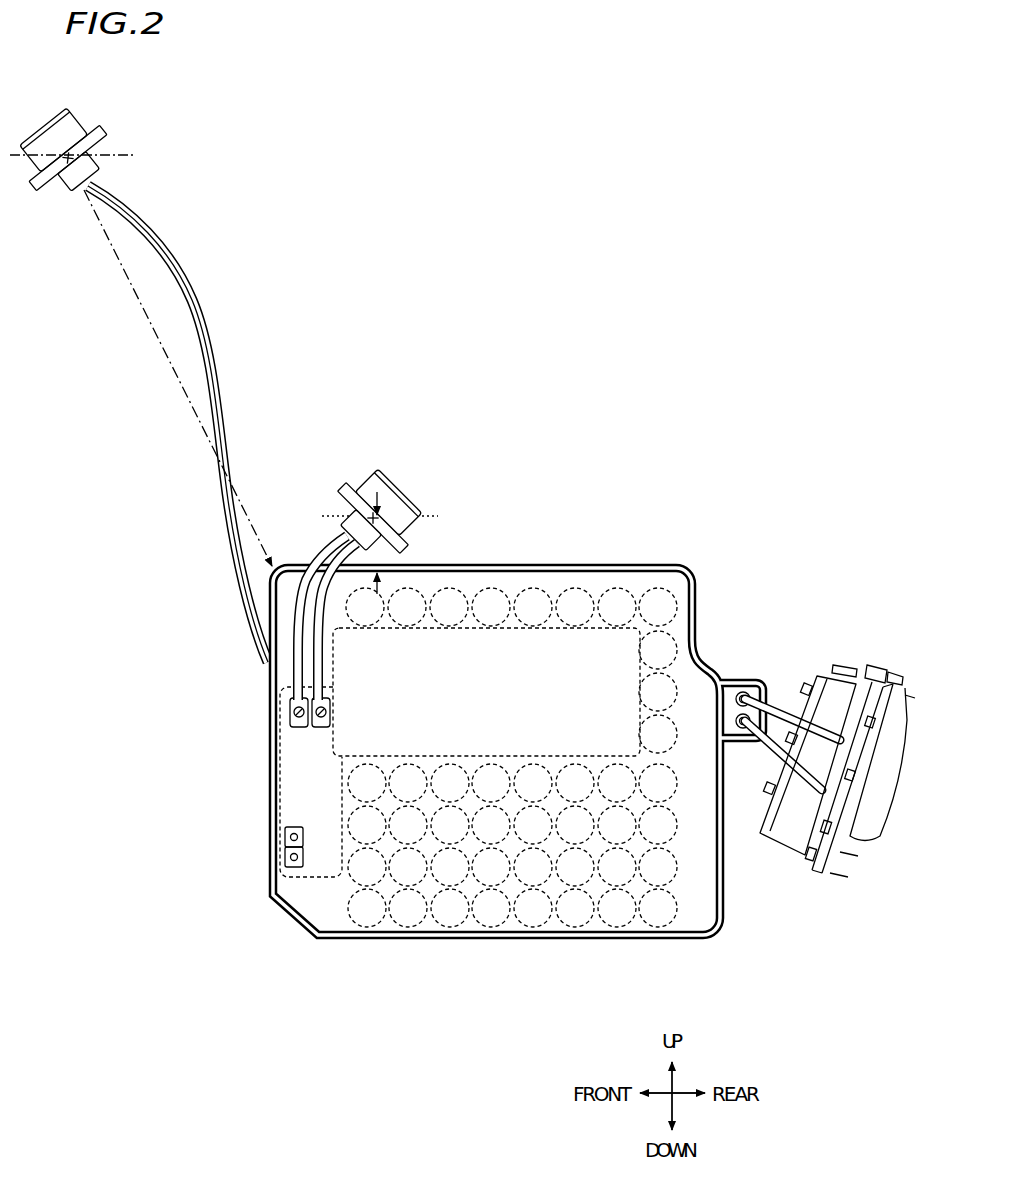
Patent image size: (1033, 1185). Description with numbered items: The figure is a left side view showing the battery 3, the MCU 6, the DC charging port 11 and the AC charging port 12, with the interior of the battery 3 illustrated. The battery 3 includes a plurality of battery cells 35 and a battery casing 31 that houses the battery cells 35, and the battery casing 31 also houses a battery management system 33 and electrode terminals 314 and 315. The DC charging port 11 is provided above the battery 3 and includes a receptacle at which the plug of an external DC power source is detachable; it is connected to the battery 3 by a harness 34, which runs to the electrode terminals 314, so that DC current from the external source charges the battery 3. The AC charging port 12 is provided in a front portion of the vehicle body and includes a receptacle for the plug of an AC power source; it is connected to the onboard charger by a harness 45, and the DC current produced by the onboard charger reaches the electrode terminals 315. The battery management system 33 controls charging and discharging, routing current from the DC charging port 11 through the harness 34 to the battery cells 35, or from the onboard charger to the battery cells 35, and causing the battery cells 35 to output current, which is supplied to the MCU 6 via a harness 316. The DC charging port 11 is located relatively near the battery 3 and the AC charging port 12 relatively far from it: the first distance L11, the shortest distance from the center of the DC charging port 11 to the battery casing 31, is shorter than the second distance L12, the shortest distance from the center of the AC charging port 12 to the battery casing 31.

The battery 3 is at (482, 746).
The MCU 6 is at (837, 688).
The DC charging port 11 is at (398, 488).
The AC charging port 12 is at (72, 123).
The battery casing 31 is at (510, 567).
The battery management system 33 is at (590, 653).
The harness 34 is at (328, 555).
The battery cells 35 is at (676, 597).
The harness 45 is at (173, 254).
The electrode terminals 314 is at (327, 722).
The electrode terminals 315 is at (288, 862).
The harness 316 is at (771, 745).
The first distance L11 is at (383, 542).
The second distance L12 is at (178, 378).